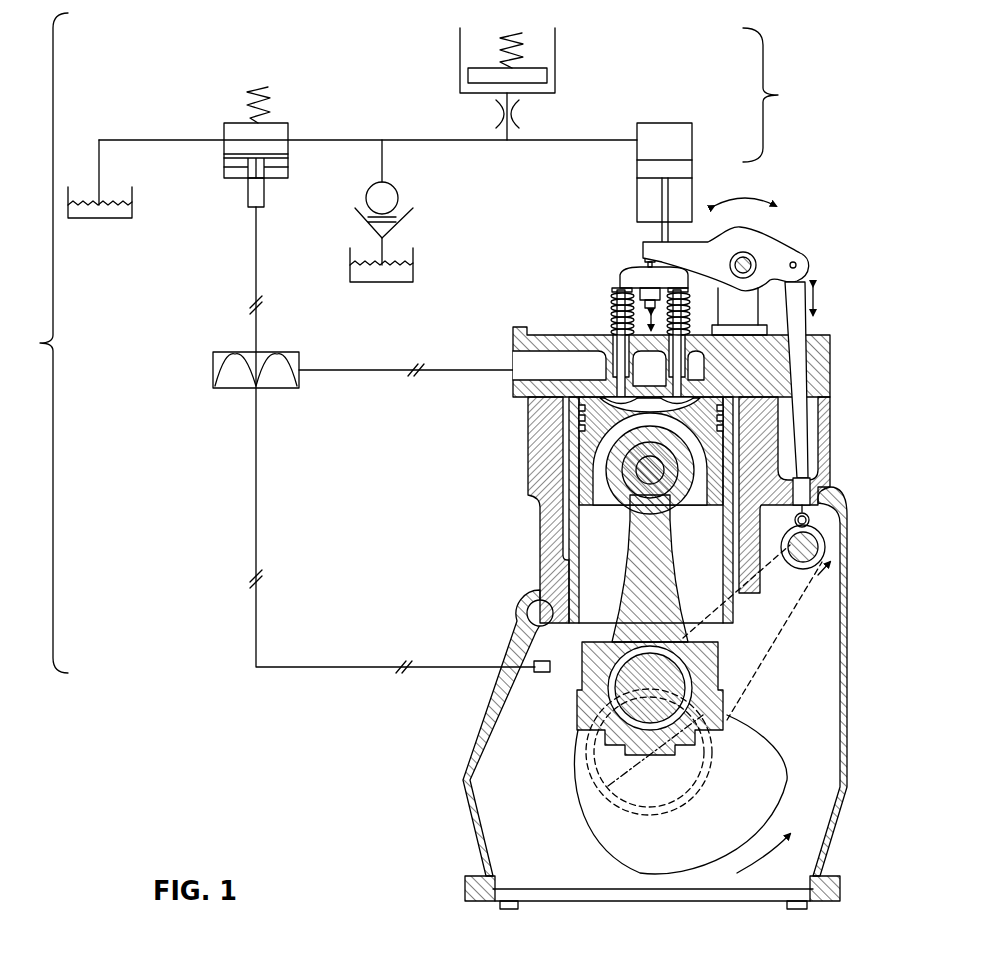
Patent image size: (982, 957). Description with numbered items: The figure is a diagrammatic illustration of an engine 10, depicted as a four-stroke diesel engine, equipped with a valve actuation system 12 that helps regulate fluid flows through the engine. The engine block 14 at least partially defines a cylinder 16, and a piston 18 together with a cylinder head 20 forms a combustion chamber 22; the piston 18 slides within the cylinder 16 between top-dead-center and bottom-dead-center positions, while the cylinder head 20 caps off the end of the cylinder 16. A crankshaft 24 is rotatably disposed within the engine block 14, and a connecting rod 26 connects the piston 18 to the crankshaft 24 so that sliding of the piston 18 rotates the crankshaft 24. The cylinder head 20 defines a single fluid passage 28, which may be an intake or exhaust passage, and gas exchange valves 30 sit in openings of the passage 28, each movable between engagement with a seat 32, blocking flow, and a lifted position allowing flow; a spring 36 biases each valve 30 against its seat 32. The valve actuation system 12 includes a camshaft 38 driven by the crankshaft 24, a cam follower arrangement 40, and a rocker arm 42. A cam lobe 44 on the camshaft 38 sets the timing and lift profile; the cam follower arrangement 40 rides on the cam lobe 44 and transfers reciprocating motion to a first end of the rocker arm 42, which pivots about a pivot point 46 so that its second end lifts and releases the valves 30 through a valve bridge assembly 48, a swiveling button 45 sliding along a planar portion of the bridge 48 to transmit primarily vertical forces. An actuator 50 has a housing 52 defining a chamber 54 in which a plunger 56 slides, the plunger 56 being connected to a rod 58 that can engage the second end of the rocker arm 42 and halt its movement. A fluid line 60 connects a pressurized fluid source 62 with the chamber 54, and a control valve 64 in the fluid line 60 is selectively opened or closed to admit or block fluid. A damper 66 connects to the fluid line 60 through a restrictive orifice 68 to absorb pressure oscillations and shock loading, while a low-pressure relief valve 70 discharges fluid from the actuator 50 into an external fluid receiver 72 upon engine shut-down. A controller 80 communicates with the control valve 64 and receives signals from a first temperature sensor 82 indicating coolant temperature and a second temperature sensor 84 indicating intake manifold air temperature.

The engine 10 is at (440, 726).
The valve actuation system 12 is at (43, 343).
The engine block 14 is at (530, 418).
The cylinder 16 is at (605, 455).
The piston 18 is at (580, 473).
The cylinder head 20 is at (653, 362).
The combustion chamber 22 is at (600, 398).
The crankshaft 24 is at (623, 790).
The connecting rod 26 is at (648, 594).
The fluid passage 28 is at (513, 358).
The gas exchange valve 30 is at (648, 386).
The seat 32 is at (650, 410).
The spring 36 is at (612, 308).
The camshaft 38 is at (803, 562).
The cam follower arrangement 40 is at (805, 326).
The rocker arm 42 is at (726, 266).
The cam lobe 44 is at (799, 528).
The button 45 is at (647, 256).
The pivot point 46 is at (752, 261).
The valve bridge assembly 48 is at (622, 275).
The actuator 50 is at (773, 95).
The housing 52 is at (659, 167).
The chamber 54 is at (680, 135).
The plunger 56 is at (685, 168).
The rod 58 is at (657, 200).
The fluid line 60 is at (605, 140).
The source 62 is at (132, 212).
The control valve 64 is at (288, 125).
The damper 66 is at (555, 55).
The restrictive orifice 68 is at (494, 115).
The low-pressure relief valve 70 is at (358, 215).
The external fluid receiver 72 is at (350, 270).
The controller 80 is at (213, 370).
The first temperature sensor 82 is at (542, 674).
The second temperature sensor 84 is at (537, 365).